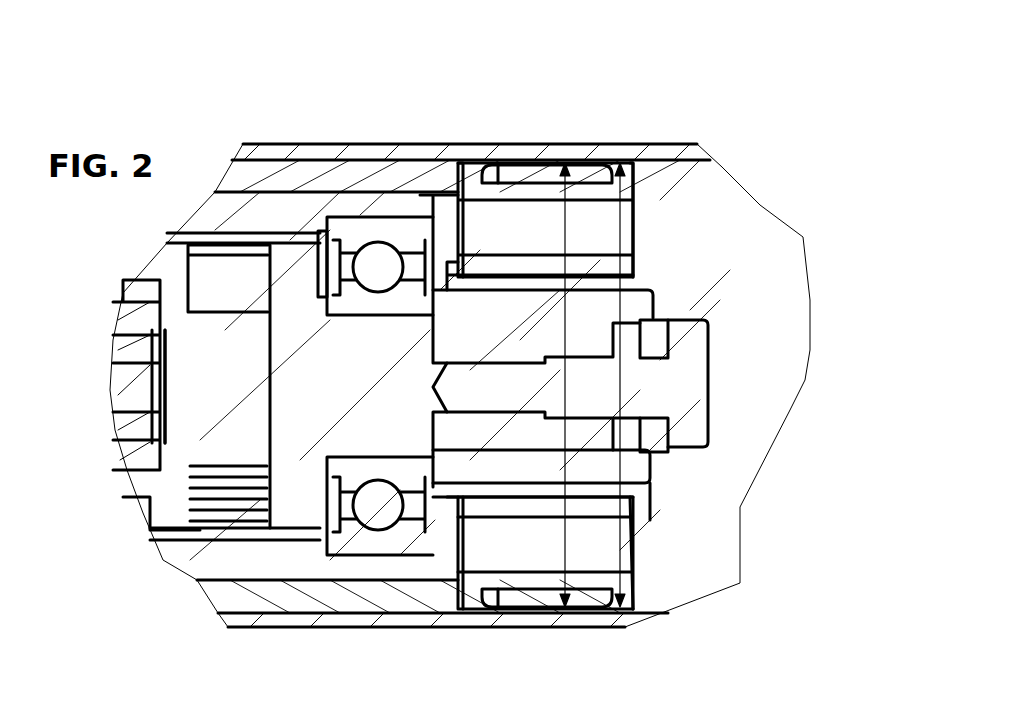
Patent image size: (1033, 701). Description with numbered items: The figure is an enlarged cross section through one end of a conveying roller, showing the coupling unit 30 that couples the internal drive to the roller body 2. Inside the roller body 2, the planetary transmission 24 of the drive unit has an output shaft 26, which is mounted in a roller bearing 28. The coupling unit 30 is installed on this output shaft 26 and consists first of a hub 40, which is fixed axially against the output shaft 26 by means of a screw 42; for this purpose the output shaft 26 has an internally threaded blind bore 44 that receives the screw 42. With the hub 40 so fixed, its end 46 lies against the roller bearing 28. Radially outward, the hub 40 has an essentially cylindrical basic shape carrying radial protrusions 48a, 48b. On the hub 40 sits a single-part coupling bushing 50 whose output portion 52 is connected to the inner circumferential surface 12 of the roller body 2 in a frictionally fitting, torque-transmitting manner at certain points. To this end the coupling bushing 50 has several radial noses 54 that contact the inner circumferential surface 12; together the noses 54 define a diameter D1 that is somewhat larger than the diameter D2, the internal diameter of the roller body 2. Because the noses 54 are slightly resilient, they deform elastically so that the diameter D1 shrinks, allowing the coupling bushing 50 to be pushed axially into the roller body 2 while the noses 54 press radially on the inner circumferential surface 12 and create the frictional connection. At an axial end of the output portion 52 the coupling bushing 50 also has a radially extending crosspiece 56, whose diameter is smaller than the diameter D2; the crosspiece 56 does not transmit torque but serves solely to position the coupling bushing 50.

The roller body 2 is at (420, 160).
The inner circumferential surface 12 is at (396, 172).
The planetary transmission 24 is at (193, 420).
The output shaft 26 is at (333, 400).
The roller bearing 28 is at (348, 237).
The coupling unit 30 is at (618, 122).
The hub 40 is at (637, 468).
The screw 42 is at (688, 404).
The blind bore 44 is at (467, 400).
The end 46 is at (410, 480).
The radial protrusion 48a is at (640, 272).
The radial protrusion 48b is at (637, 520).
The coupling bushing 50 is at (483, 198).
The output portion 52 is at (636, 176).
The radial noses 54 is at (542, 170).
The crosspiece 56 is at (465, 173).
The diameter D1 is at (565, 392).
The diameter D2 is at (622, 378).